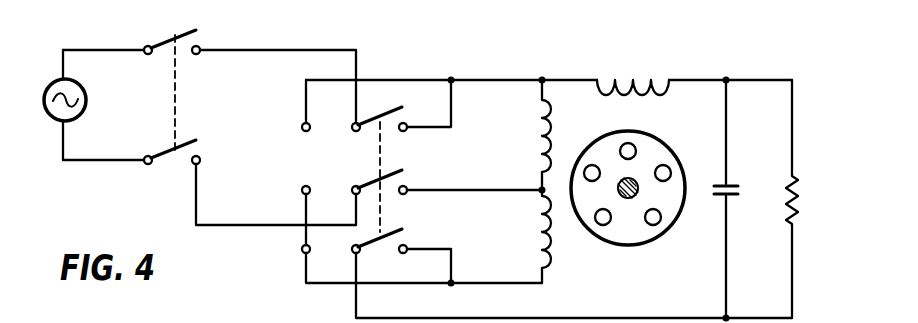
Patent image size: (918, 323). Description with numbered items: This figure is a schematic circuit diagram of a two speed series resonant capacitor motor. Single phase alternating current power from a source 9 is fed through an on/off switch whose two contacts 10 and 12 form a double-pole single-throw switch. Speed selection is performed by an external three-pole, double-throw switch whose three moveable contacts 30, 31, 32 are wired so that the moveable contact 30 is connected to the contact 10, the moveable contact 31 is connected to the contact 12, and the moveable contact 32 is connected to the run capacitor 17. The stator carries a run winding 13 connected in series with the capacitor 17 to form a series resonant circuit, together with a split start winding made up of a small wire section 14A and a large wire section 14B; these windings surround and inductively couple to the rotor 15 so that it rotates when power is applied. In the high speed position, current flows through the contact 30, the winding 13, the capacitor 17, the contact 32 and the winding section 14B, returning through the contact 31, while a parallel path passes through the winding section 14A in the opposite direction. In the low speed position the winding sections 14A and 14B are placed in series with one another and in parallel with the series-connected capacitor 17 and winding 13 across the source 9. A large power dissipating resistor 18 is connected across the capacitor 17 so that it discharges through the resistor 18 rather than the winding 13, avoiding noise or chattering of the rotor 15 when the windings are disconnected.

The source 9 is at (50, 85).
The contact of on/off switch 10 is at (160, 43).
The contact of on/off switch 12 is at (167, 164).
The run winding 13 is at (638, 82).
The start winding section 14A is at (543, 133).
The start winding section 14B is at (548, 240).
The rotor 15 is at (663, 238).
The run capacitor 17 is at (737, 197).
The power dissipating resistor 18 is at (797, 205).
The moveable contact 30 is at (392, 104).
The moveable contact 31 is at (392, 167).
The moveable contact 32 is at (392, 228).